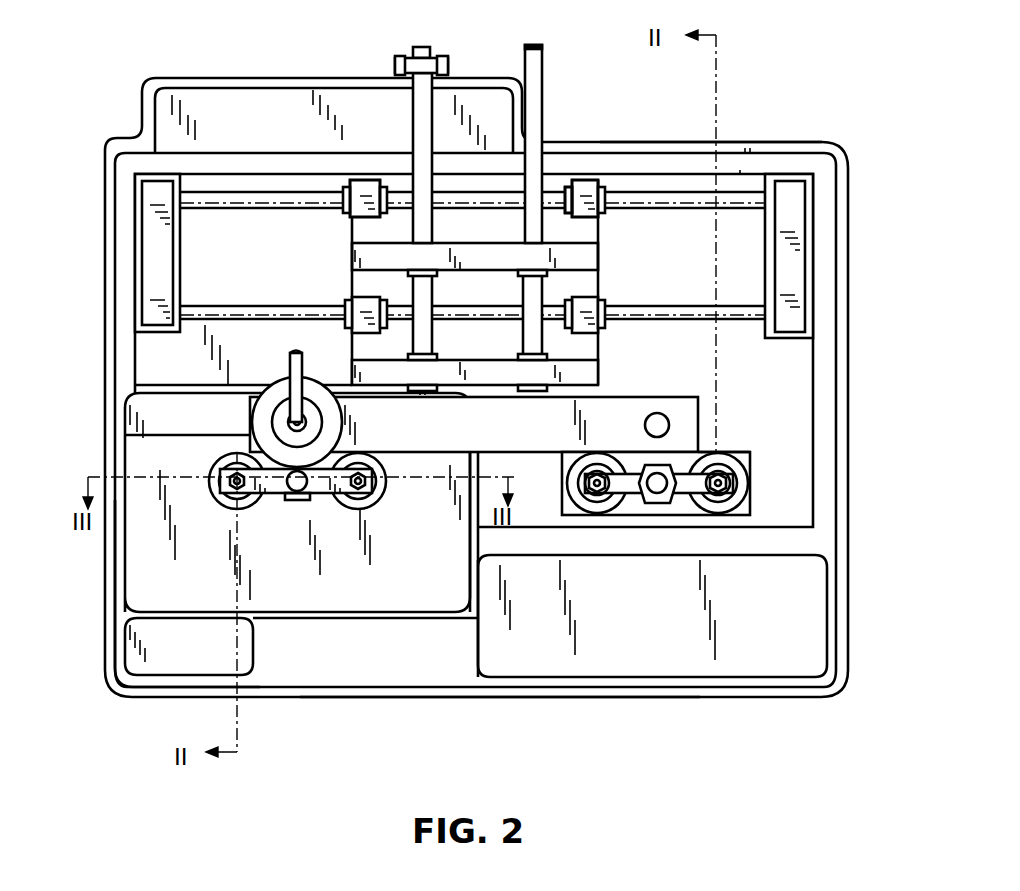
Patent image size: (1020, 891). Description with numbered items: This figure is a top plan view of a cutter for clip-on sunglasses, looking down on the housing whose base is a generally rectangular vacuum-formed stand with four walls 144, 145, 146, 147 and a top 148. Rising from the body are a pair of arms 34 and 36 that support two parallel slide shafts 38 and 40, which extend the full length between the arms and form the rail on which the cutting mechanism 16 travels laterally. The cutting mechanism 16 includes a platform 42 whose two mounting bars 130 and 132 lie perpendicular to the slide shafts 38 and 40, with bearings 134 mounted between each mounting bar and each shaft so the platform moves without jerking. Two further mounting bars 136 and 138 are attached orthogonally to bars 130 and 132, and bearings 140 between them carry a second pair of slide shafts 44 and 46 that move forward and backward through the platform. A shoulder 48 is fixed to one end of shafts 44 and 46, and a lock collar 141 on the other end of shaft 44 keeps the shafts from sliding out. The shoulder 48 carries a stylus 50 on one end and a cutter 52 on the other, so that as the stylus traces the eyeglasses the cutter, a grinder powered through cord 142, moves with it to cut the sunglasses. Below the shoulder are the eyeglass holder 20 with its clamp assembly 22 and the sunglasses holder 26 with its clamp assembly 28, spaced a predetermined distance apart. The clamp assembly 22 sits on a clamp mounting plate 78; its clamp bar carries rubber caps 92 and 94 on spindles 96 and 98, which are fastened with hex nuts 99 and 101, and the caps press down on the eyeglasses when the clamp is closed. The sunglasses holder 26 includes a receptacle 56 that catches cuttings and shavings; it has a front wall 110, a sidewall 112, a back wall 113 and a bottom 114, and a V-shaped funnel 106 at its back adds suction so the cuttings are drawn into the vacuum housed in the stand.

The cutting mechanism 16 is at (718, 356).
The eyeglass holder 20 is at (750, 504).
The clamp assembly 22 is at (720, 452).
The holder for sunglasses 26 is at (366, 494).
The clamp assembly 28 is at (262, 500).
The arm 34 is at (170, 281).
The arm 36 is at (775, 296).
The slide shaft 38 is at (278, 208).
The slide shaft 40 is at (280, 308).
The platform 42 is at (583, 178).
The slide shaft 44 is at (432, 50).
The slide shaft 46 is at (542, 66).
The shoulder 48 is at (665, 398).
The stylus 50 is at (660, 408).
The cutter 52 is at (316, 392).
The receptacle 56 is at (372, 614).
The clamp mounting plate 78 is at (745, 460).
The rubber cap 92 is at (742, 486).
The rubber cap 94 is at (585, 482).
The spindle 96 is at (718, 493).
The spindle 98 is at (575, 494).
The hex nut 99 is at (740, 470).
The hex nut 101 is at (597, 470).
The funnel 106 is at (130, 428).
The front wall 110 is at (312, 618).
The sidewall 112 is at (478, 578).
The back wall 113 is at (207, 386).
The bottom 114 is at (290, 596).
The mounting bar 130 is at (368, 192).
The mounting bar 132 is at (591, 186).
The bearing 134 is at (345, 196).
The mounting bar 136 is at (590, 262).
The mounting bar 138 is at (590, 372).
The bearing 140 is at (520, 240).
The lock collar 141 is at (405, 60).
The cord 142 is at (290, 366).
The wall 144 is at (506, 698).
The wall 145 is at (120, 578).
The wall 146 is at (836, 312).
The wall 147 is at (803, 146).
The top 148 is at (820, 632).